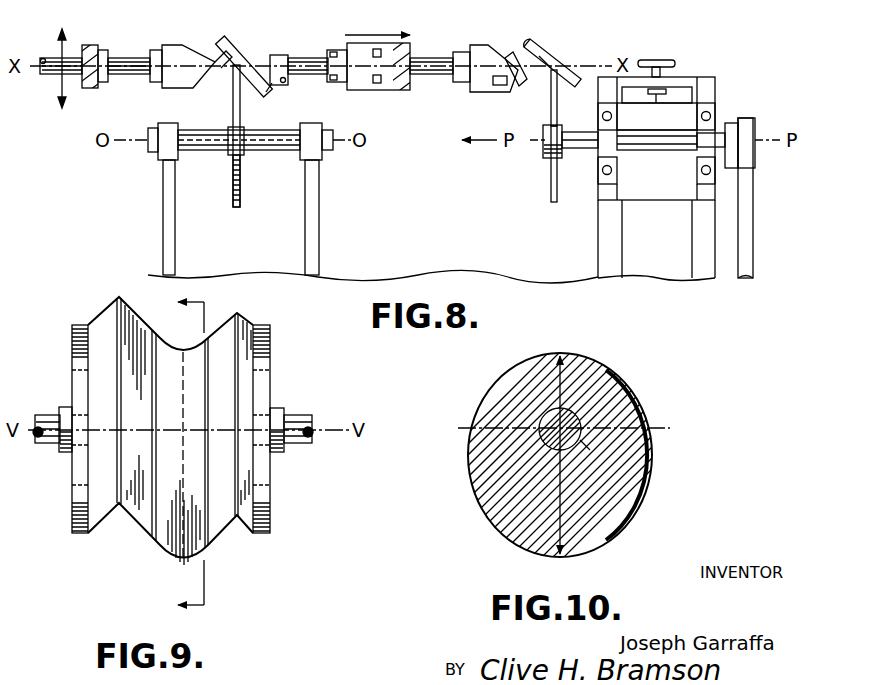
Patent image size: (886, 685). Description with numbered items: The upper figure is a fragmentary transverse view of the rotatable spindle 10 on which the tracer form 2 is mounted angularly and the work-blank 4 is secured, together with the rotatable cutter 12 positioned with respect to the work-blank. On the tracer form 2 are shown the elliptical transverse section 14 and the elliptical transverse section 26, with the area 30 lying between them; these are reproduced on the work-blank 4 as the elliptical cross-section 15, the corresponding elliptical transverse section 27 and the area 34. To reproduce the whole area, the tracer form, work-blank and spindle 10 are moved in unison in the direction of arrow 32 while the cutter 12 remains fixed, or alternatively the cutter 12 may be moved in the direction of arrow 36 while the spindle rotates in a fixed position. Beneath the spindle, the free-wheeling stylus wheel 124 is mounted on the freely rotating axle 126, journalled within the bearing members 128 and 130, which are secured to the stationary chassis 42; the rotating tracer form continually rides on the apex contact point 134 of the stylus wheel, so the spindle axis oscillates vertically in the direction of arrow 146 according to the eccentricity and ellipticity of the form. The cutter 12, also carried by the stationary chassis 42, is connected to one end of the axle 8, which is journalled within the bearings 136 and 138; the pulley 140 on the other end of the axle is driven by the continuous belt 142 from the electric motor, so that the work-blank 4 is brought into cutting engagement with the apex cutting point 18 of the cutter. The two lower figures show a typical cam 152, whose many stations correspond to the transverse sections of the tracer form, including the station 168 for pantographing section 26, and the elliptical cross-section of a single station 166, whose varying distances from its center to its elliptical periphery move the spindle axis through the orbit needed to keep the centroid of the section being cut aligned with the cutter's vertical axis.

In FIG. 8, the arrow 146 is at (58, 52).
In FIG. 8, the rotatable spindle 10 is at (67, 52).
In FIG. 9, the rotatable spindle 10 is at (175, 456).
In FIG. 8, the tracer form 2 is at (206, 44).
In FIG. 8, the elliptical transverse section 26 is at (220, 41).
In FIG. 8, the transverse section 14 is at (240, 64).
In FIG. 8, the area 30 is at (222, 68).
In FIG. 8, the apex contact point 134 is at (243, 82).
In FIG. 8, the arrow 32 is at (368, 14).
In FIG. 8, the work-blank 4 is at (520, 40).
In FIG. 8, the elliptical transverse section 27 is at (530, 48).
In FIG. 8, the area 34 is at (548, 62).
In FIG. 8, the elliptical transverse cross-section 15 is at (556, 66).
In FIG. 8, the apex cutting point 18 is at (549, 76).
In FIG. 8, the rotatable cutter 12 is at (551, 178).
In FIG. 8, the arrow 36 is at (488, 146).
In FIG. 8, the stationary chassis 42 is at (418, 275).
In FIG. 8, the bearing member 128 is at (163, 160).
In FIG. 8, the axle 126 is at (202, 152).
In FIG. 8, the stylus wheel 124 is at (241, 185).
In FIG. 8, the bearing member 130 is at (316, 162).
In FIG. 8, the axle 8 is at (668, 112).
In FIG. 8, the bearing 136 is at (617, 152).
In FIG. 8, the bearing 138 is at (698, 158).
In FIG. 8, the pulley 140 is at (757, 125).
In FIG. 8, the continuous belt 142 is at (747, 228).
In FIG. 9, the cam station 168 is at (153, 416).
In FIG. 9, the cam 152 is at (140, 527).
In FIG. 9, the cam station 166 is at (205, 540).
In FIG. 10, the cam station 166 is at (482, 482).